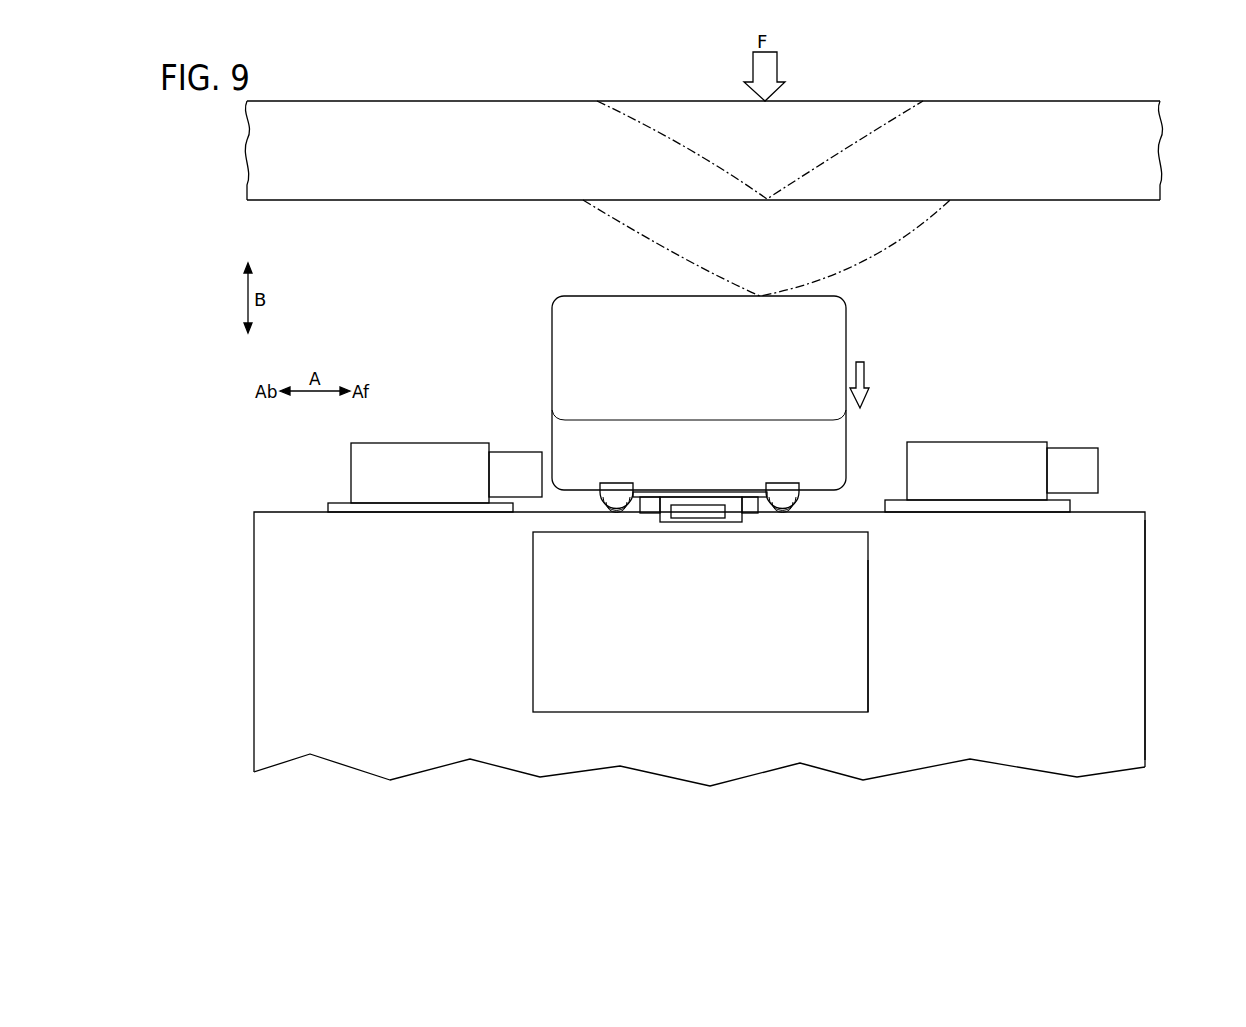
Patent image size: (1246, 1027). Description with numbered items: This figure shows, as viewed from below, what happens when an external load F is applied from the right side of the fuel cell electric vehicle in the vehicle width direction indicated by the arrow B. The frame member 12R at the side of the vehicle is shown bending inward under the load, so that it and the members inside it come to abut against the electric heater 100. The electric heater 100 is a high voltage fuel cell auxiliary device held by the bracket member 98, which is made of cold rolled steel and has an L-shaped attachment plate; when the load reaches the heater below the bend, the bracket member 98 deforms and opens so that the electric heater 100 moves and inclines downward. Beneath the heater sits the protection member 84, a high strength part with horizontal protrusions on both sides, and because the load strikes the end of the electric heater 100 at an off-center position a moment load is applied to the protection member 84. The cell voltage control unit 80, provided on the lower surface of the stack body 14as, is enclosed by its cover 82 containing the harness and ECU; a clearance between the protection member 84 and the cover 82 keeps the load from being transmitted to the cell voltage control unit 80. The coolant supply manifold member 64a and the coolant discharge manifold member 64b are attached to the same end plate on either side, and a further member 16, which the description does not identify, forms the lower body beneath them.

The frame member 12R is at (1047, 200).
The electric heater 100 is at (838, 340).
The bracket member 98 is at (650, 490).
The protection member 84 is at (695, 522).
The cell voltage control unit 80 is at (870, 600).
The cover 82 is at (855, 662).
The floor panel 16 is at (1157, 527).
The stack body 14as is at (1125, 612).
The coolant supply manifold member 64a is at (417, 441).
The coolant discharge manifold member 64b is at (1003, 440).